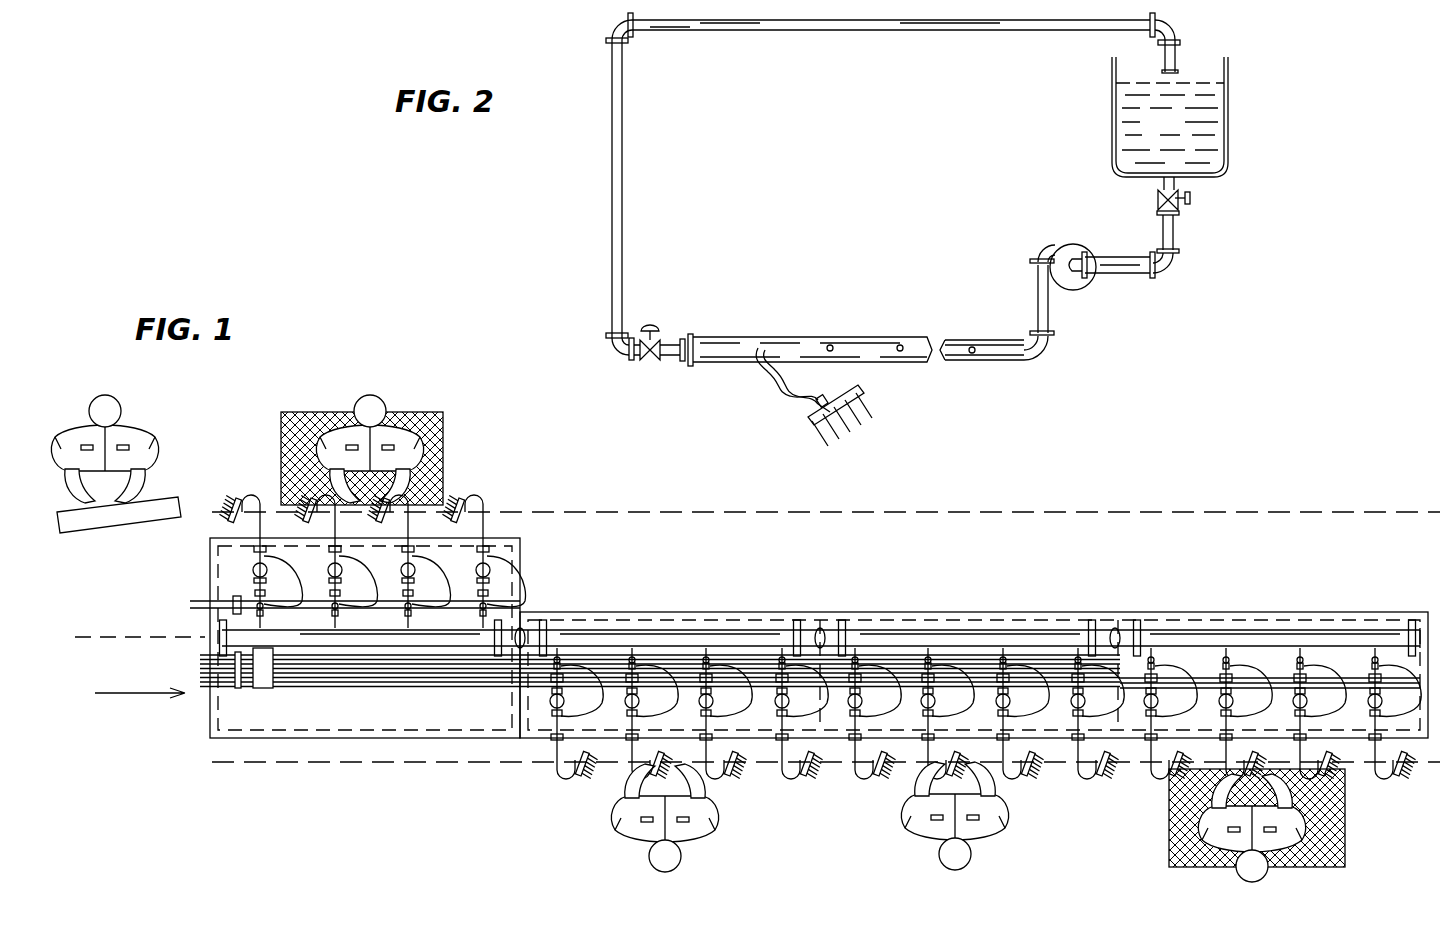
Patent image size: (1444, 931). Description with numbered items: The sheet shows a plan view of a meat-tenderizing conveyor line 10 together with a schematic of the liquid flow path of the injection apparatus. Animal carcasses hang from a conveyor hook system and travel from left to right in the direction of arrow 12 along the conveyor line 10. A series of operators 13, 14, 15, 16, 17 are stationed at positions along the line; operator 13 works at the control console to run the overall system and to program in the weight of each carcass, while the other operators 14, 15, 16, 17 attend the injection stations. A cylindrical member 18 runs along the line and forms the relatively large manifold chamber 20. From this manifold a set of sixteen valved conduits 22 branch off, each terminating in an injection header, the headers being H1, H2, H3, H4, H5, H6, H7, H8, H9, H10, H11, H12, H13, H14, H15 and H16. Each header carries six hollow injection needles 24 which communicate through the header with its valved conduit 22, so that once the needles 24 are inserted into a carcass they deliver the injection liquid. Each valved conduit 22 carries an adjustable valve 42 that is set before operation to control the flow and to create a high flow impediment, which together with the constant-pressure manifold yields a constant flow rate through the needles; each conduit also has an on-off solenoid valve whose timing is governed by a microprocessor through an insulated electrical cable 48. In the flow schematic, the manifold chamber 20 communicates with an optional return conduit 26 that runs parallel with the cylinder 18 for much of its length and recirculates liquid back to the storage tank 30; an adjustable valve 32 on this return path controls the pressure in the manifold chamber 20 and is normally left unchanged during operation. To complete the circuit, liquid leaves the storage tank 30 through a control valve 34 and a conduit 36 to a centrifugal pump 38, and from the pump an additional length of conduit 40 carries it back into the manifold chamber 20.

In FIG. 1, the conveyor line 10 is at (129, 626).
In FIG. 1, the arrow 12 is at (140, 694).
In FIG. 1, the operator 13 is at (140, 420).
In FIG. 1, the operator 14 is at (385, 437).
In FIG. 1, the operator 15 is at (694, 840).
In FIG. 1, the operator 16 is at (984, 845).
In FIG. 1, the operator 17 is at (1280, 862).
In FIG. 1, the cylindrical member 18 is at (655, 635).
In FIG. 2, the manifold chamber 20 is at (948, 362).
In FIG. 1, the manifold chamber 20 is at (215, 635).
In FIG. 2, the valved conduit 22 is at (900, 345).
In FIG. 1, the valved conduit 22 is at (496, 516).
In FIG. 2, the hollow injection needle 24 is at (816, 432).
In FIG. 2, the return conduit 26 is at (802, 32).
In FIG. 1, the return conduit 26 is at (957, 630).
In FIG. 2, the storage tank 30 is at (1178, 131).
In FIG. 2, the adjustable valve 32 is at (660, 357).
In FIG. 2, the control valve 34 is at (1185, 202).
In FIG. 2, the conduit 36 is at (1130, 270).
In FIG. 2, the centrifugal pump 38 is at (1082, 248).
In FIG. 2, the conduit 40 is at (1038, 280).
In FIG. 1, the adjustable valve 42 is at (1233, 668).
In FIG. 1, the insulated cable 48 is at (446, 680).
In FIG. 2, the injection header H1 is at (846, 385).
In FIG. 1, the injection header H1 is at (252, 498).
In FIG. 1, the injection header H2 is at (322, 536).
In FIG. 1, the injection header H3 is at (397, 536).
In FIG. 1, the injection header H4 is at (472, 500).
In FIG. 1, the injection header H5 is at (580, 780).
In FIG. 1, the injection header H6 is at (660, 768).
In FIG. 1, the injection header H7 is at (738, 778).
In FIG. 1, the injection header H8 is at (810, 778).
In FIG. 1, the injection header H9 is at (886, 778).
In FIG. 1, the injection header H10 is at (958, 768).
In FIG. 1, the injection header H11 is at (1036, 780).
In FIG. 1, the injection header H12 is at (1106, 780).
In FIG. 1, the injection header H13 is at (1172, 780).
In FIG. 1, the injection header H14 is at (1254, 768).
In FIG. 1, the injection header H15 is at (1330, 780).
In FIG. 1, the injection header H16 is at (1404, 780).